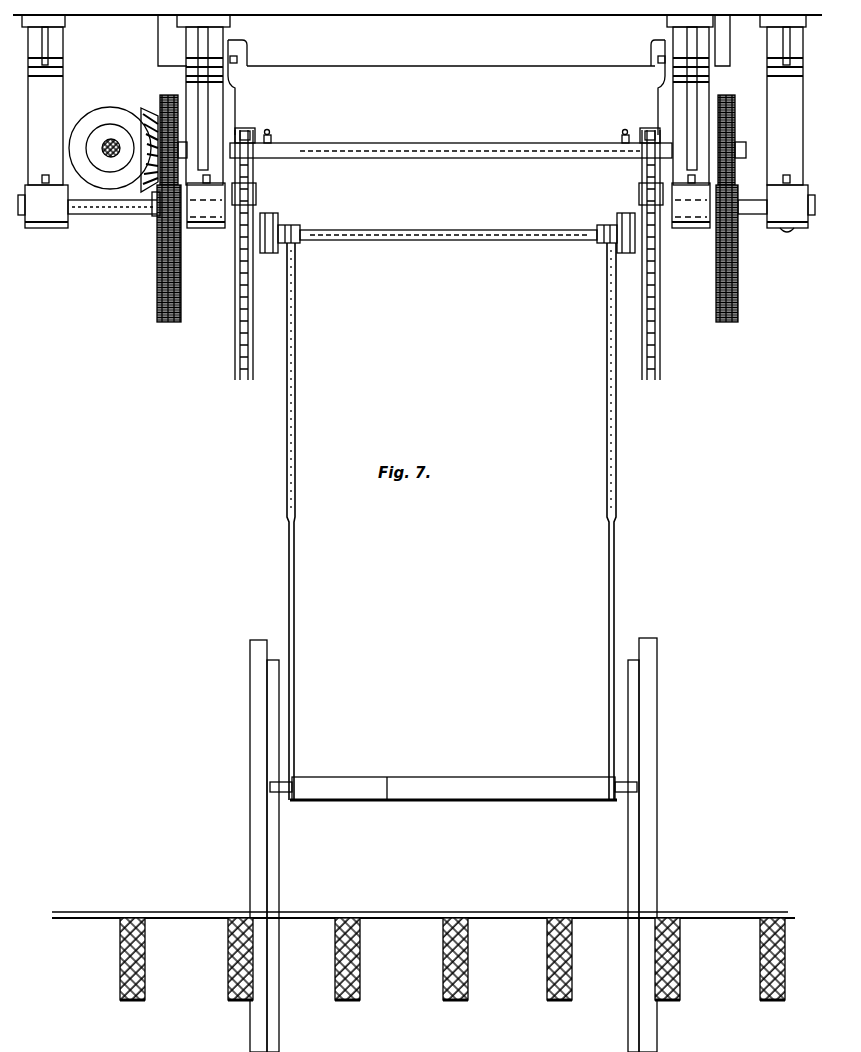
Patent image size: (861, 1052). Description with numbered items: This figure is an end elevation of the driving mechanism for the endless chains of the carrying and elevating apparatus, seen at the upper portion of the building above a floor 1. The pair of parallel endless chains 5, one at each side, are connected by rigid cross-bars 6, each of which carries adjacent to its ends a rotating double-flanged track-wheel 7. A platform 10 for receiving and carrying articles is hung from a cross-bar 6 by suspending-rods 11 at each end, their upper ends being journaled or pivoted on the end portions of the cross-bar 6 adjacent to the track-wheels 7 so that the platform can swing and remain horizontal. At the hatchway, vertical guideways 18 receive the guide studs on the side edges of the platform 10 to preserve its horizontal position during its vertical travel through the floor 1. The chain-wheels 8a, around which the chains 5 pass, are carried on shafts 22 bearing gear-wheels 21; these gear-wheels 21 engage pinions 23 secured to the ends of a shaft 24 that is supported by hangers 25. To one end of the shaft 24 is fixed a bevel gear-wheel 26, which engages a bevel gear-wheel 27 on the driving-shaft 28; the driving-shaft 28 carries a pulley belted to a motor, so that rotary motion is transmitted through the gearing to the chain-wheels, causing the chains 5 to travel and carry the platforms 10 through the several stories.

The floor 1 is at (432, 900).
The endless chain 5 is at (453, 255).
The cross-bar 6 is at (448, 226).
The track-wheel 7 is at (280, 225).
The sprocket 8a is at (447, 193).
The platform 10 is at (450, 777).
The suspending-rod 11 is at (462, 521).
The vertical guideway 18 is at (452, 845).
The gear-wheel 21 is at (450, 253).
The shaft 22 is at (417, 209).
The pinion 23 is at (184, 125).
The shaft 24 is at (451, 141).
The hanger 25 is at (214, 104).
The bevel gear-wheel 26 is at (145, 140).
The bevel gear-wheel 27 is at (110, 139).
The driving-shaft 28 is at (112, 141).